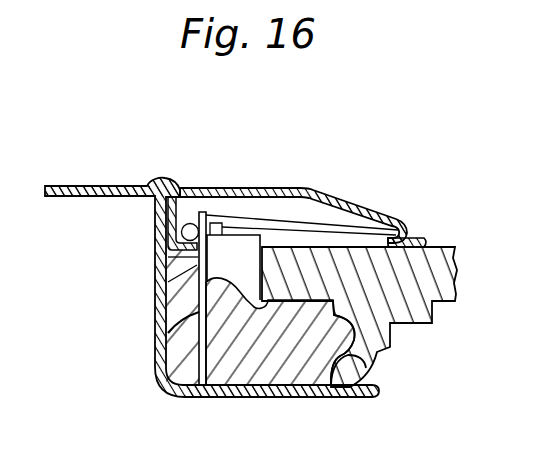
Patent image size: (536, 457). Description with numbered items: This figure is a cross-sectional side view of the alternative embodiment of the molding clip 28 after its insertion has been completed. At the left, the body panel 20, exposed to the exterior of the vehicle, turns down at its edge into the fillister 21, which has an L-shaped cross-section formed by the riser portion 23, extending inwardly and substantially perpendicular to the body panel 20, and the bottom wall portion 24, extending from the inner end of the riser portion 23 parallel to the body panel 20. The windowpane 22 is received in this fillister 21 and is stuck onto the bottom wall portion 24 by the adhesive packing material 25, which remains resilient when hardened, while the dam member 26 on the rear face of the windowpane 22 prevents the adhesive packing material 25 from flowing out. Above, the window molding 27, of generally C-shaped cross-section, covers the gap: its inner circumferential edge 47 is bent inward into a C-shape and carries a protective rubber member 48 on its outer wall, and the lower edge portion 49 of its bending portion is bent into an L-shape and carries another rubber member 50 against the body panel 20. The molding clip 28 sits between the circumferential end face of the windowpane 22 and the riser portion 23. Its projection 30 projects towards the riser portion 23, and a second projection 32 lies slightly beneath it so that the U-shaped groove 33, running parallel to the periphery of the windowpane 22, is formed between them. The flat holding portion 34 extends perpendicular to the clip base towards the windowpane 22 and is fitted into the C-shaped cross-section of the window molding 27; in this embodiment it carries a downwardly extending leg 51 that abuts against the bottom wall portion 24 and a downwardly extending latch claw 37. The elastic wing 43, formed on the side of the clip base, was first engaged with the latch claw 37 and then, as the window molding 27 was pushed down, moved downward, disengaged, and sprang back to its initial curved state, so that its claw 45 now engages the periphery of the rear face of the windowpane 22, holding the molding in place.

The body panel 20 is at (70, 190).
The fillister 21 is at (157, 395).
The windowpane 22 is at (443, 296).
The riser portion 23 is at (167, 308).
The bottom wall portion 24 is at (263, 392).
The adhesive packing material 25 is at (307, 378).
The dam member 26 is at (364, 366).
The window molding 27 is at (288, 191).
The molding clip 28 is at (308, 207).
The projection 30 is at (190, 224).
The projection 32 is at (167, 282).
The groove 33 is at (176, 257).
The holding portion 34 is at (342, 224).
The latch claw 37 is at (227, 226).
The elastic wing 43 is at (246, 250).
The claw 45 is at (222, 396).
The inner circumferential edge 47 is at (410, 235).
The rubber member 48 is at (426, 242).
The lower edge portion 49 is at (167, 243).
The rubber member 50 is at (168, 180).
The leg 51 is at (170, 333).